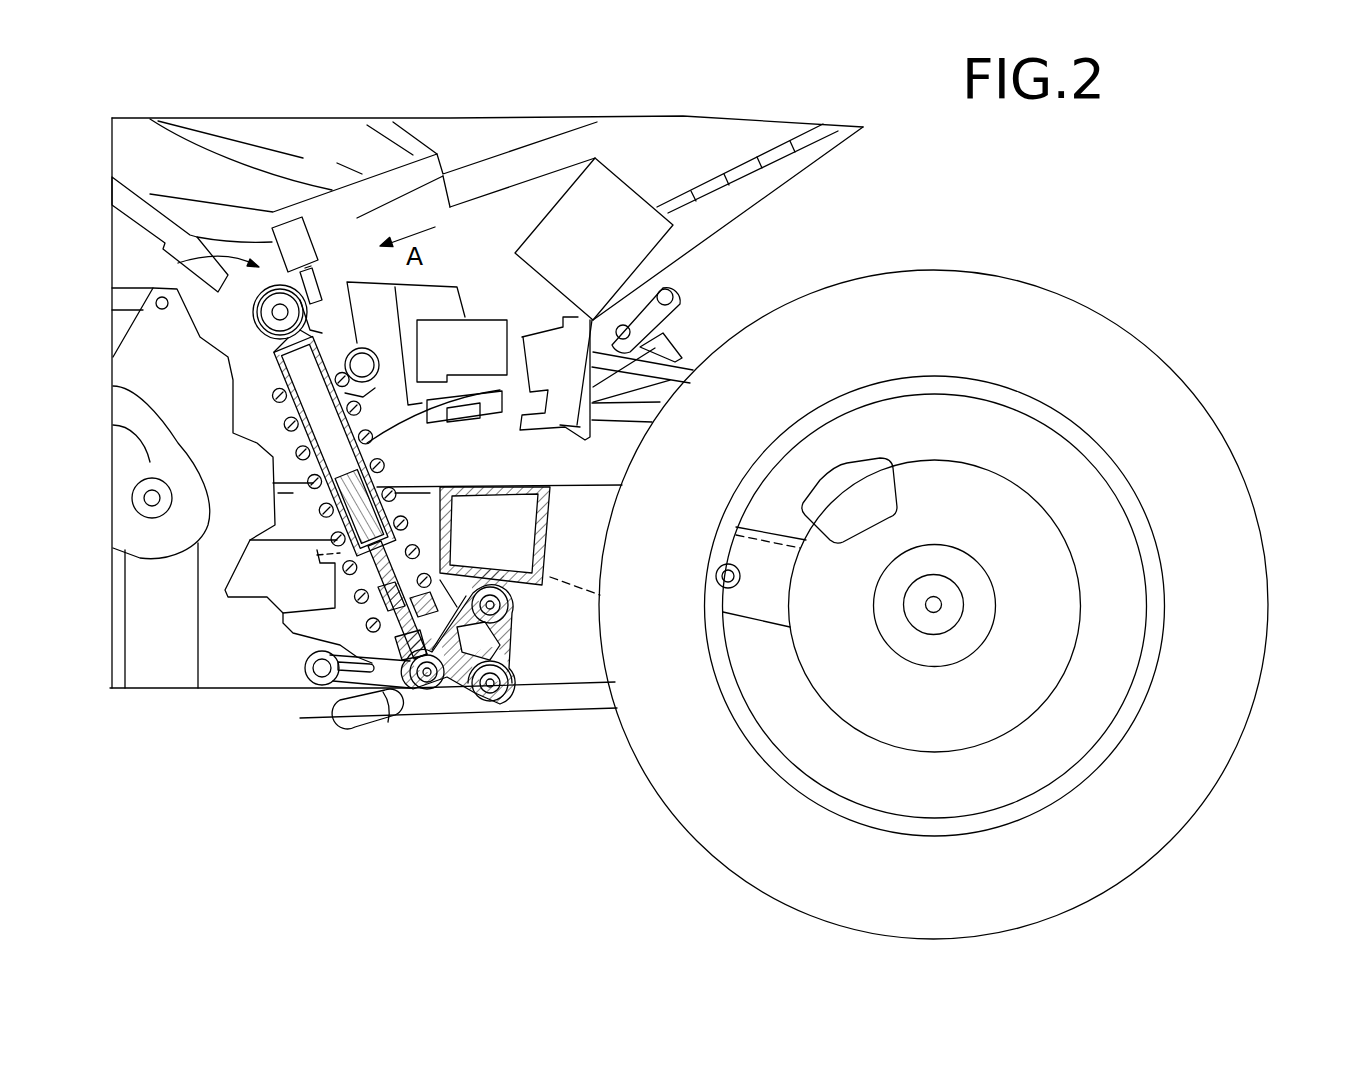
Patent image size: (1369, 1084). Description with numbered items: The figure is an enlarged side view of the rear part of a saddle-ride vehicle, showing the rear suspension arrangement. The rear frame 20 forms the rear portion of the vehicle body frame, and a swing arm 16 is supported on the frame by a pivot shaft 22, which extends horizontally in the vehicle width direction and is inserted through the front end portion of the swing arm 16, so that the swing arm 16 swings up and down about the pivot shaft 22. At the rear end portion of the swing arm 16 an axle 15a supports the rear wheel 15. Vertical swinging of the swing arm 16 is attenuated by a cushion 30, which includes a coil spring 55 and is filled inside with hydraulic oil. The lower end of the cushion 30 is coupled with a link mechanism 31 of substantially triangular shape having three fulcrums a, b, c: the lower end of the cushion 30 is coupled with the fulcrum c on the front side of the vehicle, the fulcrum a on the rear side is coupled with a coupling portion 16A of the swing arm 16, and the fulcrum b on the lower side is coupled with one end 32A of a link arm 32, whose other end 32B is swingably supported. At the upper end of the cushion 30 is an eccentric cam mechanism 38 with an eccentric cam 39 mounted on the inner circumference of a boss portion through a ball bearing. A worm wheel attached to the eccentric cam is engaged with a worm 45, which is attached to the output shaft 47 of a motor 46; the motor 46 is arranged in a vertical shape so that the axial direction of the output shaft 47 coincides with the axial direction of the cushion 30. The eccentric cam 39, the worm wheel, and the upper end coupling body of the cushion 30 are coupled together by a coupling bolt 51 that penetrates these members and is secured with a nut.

The rear wheel 15 is at (1190, 683).
The axle 15a is at (947, 604).
The swing arm 16 is at (572, 567).
The coupling portion 16A is at (537, 578).
The rear frame 20 is at (498, 163).
The pivot shaft 22 is at (150, 498).
The cushion 30 is at (320, 470).
The link mechanism 31 is at (473, 690).
The link arm 32 is at (380, 688).
The one end of the link arm 32A is at (486, 703).
The other end of the link arm 32B is at (303, 670).
The eccentric cam mechanism 38 is at (178, 263).
The eccentric cam 39 is at (253, 308).
The worm 45 is at (322, 298).
The motor 46 is at (288, 235).
The output shaft 47 is at (314, 270).
The coupling bolt 51 is at (272, 314).
The coil spring 55 is at (337, 540).
The fulcrum a is at (510, 607).
The fulcrum b is at (507, 662).
The fulcrum c is at (425, 690).